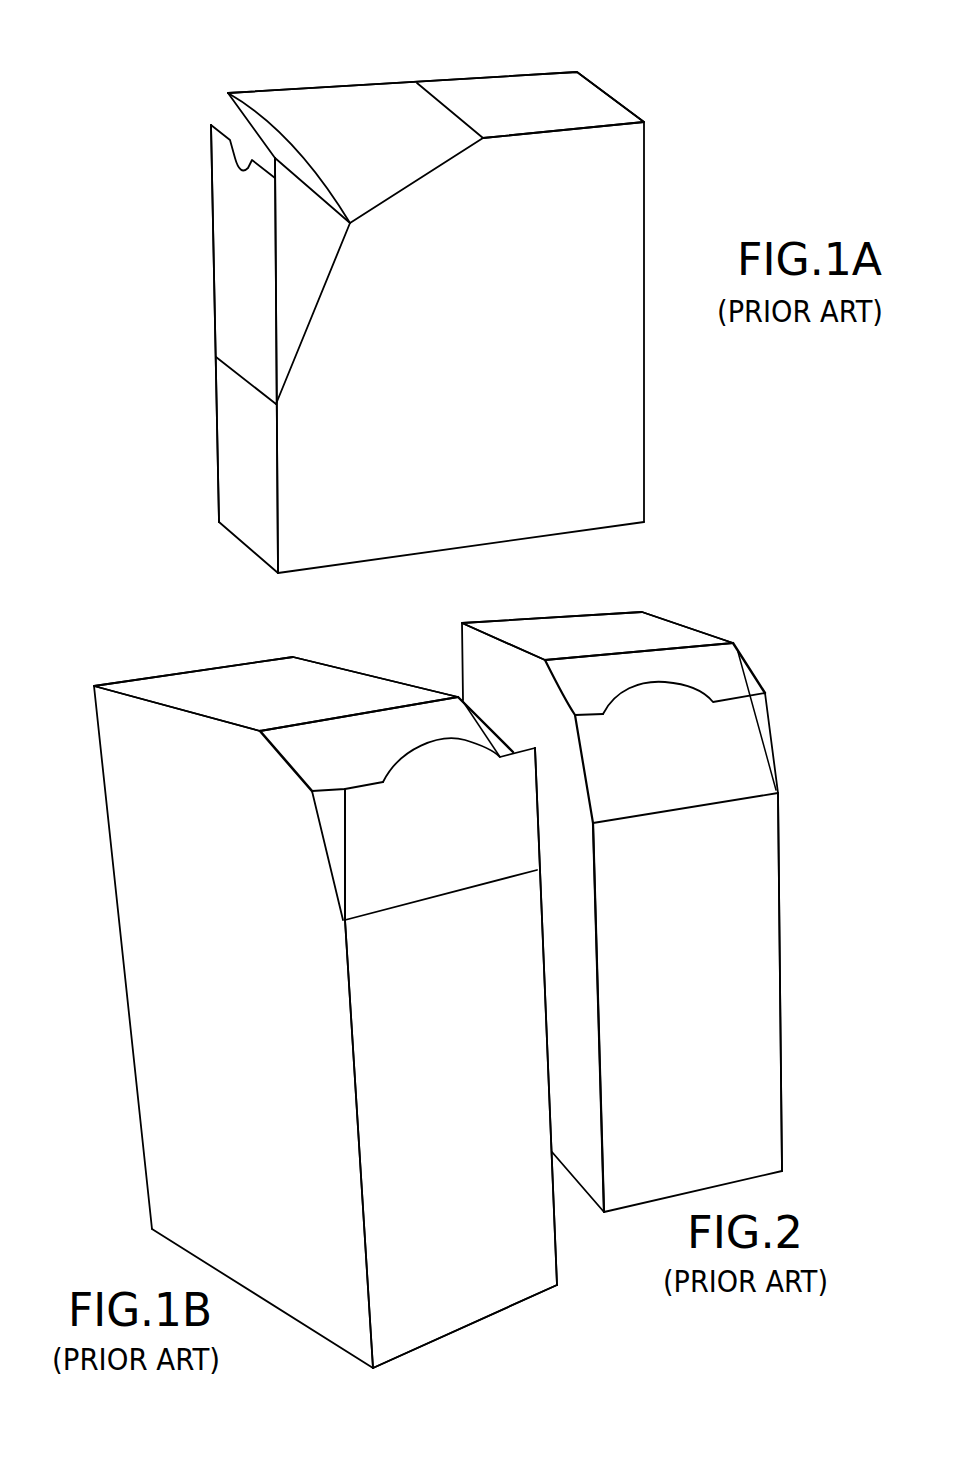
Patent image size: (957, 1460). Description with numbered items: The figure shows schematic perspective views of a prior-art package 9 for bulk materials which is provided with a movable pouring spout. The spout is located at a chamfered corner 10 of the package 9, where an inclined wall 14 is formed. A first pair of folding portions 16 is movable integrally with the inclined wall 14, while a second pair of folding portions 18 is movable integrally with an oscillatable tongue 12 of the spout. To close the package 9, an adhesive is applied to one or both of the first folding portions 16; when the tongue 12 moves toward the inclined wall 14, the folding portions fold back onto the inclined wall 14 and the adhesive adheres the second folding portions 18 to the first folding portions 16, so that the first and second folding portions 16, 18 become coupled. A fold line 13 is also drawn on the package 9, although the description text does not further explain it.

In FIG. 1B, the package 9 is at (168, 670).
In FIG. 1A, the chamfered corner 10 is at (200, 101).
In FIG. 1B, the chamfered corner 10 is at (303, 812).
In FIG. 2, the chamfered corner 10 is at (786, 668).
In FIG. 1A, the oscillatable tongue 12 is at (232, 292).
In FIG. 1B, the oscillatable tongue 12 is at (432, 843).
In FIG. 2, the oscillatable tongue 12 is at (720, 790).
In FIG. 1A, the fold line 13 is at (245, 385).
In FIG. 1B, the fold line 13 is at (367, 917).
In FIG. 1A, the inclined wall 14 is at (318, 115).
In FIG. 1B, the inclined wall 14 is at (337, 747).
In FIG. 2, the inclined wall 14 is at (707, 660).
In FIG. 1A, the first pair of folding portions 16 is at (378, 170).
In FIG. 1B, the first pair of folding portions 16 is at (480, 733).
In FIG. 2, the first pair of folding portions 16 is at (743, 663).
In FIG. 1A, the second pair of folding portions 18 is at (287, 238).
In FIG. 1B, the second pair of folding portions 18 is at (330, 830).
In FIG. 2, the second pair of folding portions 18 is at (762, 712).